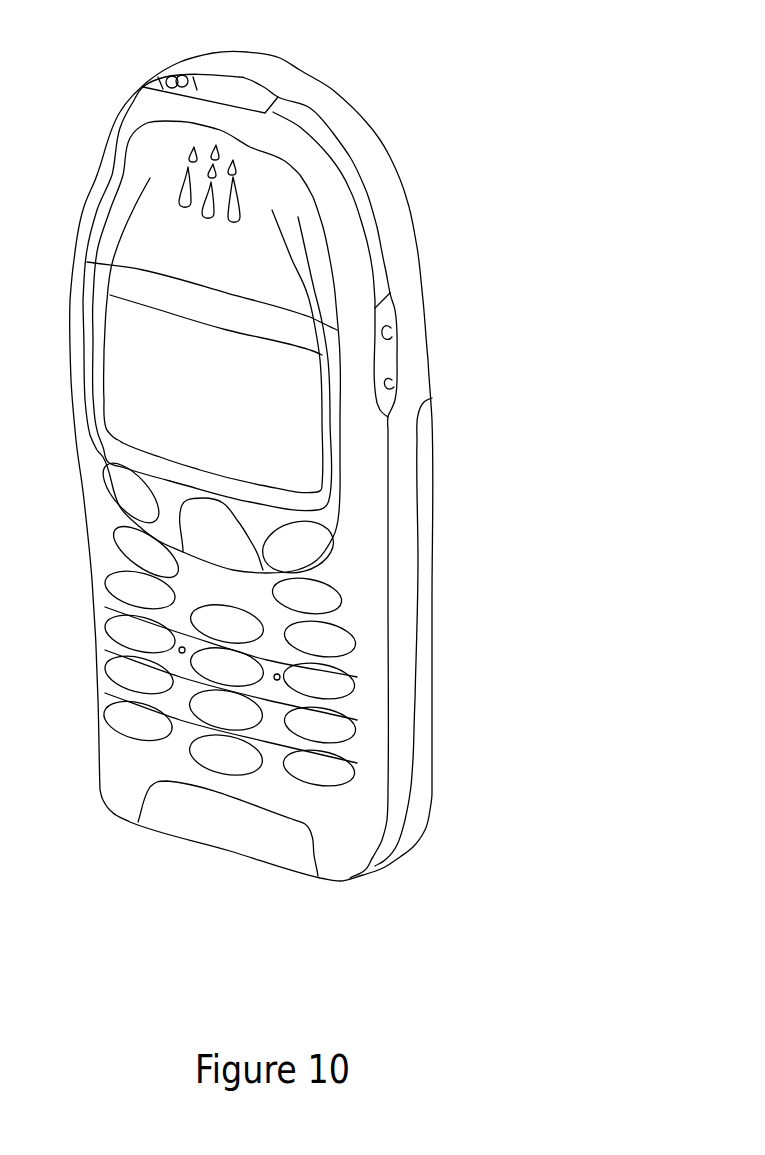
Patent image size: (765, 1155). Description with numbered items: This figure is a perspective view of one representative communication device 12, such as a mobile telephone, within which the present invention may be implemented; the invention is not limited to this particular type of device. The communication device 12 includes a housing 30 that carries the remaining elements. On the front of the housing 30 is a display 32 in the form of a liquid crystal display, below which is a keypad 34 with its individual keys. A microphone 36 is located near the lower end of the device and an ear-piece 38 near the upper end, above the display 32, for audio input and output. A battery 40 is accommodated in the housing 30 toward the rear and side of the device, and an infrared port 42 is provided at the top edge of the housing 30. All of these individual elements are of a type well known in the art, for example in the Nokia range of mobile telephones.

The communication device 12 is at (375, 58).
The housing 30 is at (398, 221).
The display 32 is at (297, 432).
The keypad 34 is at (317, 777).
The microphone 36 is at (167, 815).
The ear-piece 38 is at (200, 178).
The battery 40 is at (423, 757).
The infrared port 42 is at (233, 88).